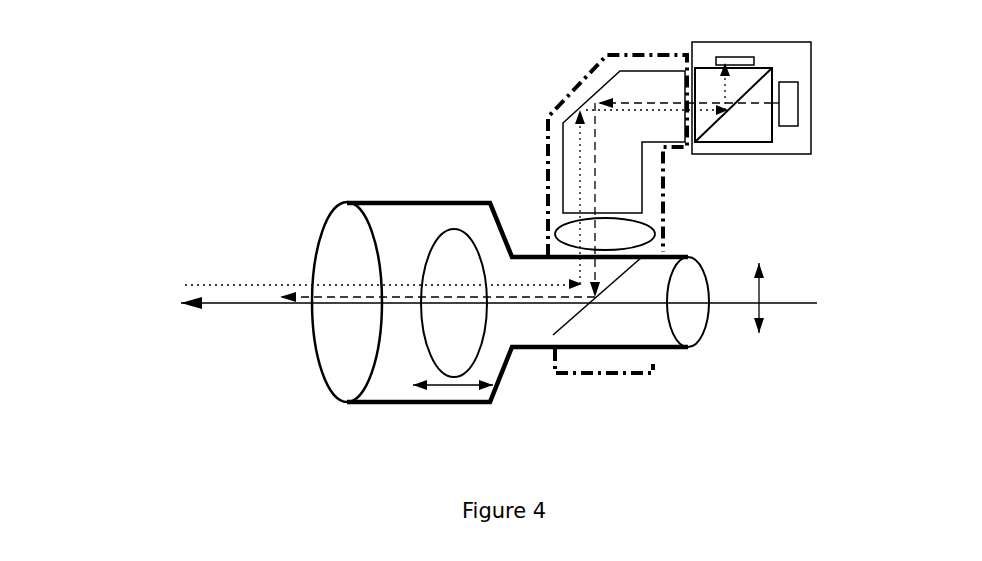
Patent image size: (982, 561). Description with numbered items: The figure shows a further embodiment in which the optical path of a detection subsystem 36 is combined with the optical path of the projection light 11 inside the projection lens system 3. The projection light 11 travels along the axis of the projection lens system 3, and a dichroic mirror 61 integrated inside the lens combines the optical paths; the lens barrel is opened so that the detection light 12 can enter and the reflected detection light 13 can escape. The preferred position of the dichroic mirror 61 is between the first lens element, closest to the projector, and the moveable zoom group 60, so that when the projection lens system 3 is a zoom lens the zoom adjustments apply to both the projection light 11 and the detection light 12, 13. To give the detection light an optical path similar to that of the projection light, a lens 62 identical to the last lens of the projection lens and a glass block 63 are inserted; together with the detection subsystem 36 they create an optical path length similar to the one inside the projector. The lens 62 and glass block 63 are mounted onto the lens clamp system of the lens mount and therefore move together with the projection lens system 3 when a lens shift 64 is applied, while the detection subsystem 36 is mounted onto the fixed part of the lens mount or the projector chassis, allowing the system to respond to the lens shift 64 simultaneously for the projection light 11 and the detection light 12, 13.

The projection lens system 3 is at (388, 208).
The projection light 11 is at (228, 304).
The detection light 12 is at (348, 297).
The reflected detection light 13 is at (210, 285).
The detection subsystem 36 is at (762, 154).
The zoom group 60 is at (458, 388).
The dichroic mirror 61 is at (620, 282).
The lens 62 is at (562, 232).
The glass block 63 is at (570, 97).
The lens shift 64 is at (760, 338).